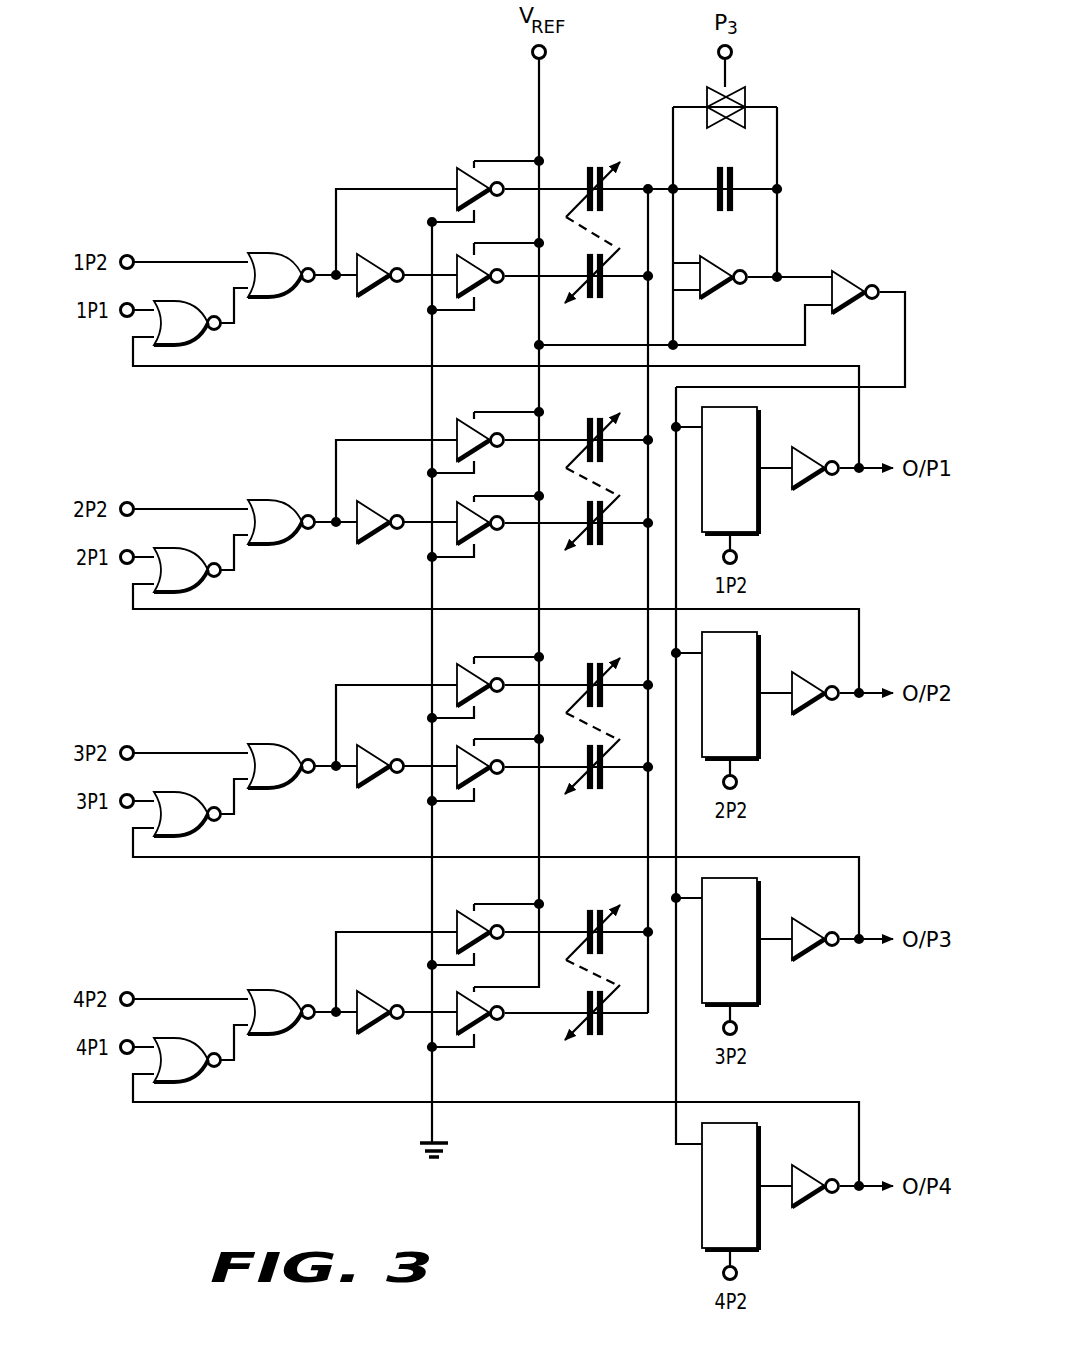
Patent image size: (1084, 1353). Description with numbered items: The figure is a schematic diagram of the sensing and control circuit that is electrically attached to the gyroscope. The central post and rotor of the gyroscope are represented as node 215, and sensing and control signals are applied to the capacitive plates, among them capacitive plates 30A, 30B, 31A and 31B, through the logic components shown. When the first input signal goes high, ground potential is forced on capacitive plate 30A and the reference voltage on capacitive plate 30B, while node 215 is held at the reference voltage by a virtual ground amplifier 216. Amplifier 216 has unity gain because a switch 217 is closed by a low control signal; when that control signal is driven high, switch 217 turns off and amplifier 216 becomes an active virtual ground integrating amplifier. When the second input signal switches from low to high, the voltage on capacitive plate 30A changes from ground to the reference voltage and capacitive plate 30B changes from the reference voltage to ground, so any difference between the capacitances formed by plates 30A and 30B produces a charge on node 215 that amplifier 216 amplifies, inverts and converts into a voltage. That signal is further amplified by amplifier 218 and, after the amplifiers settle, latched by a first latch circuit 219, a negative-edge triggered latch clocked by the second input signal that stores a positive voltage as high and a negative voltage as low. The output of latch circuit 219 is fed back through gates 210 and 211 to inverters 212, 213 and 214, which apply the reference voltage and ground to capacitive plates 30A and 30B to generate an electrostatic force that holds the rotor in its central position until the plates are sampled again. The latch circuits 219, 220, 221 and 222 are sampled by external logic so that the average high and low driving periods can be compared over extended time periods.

The gate 210 is at (203, 335).
The gate 211 is at (283, 253).
The inverter 212 is at (375, 293).
The inverter 213 is at (483, 289).
The inverter 214 is at (455, 175).
The node 215 is at (651, 998).
The virtual ground amplifier 216 is at (718, 268).
The switch 217 is at (745, 97).
The amplifier 218 is at (846, 282).
The first latch circuit 219 is at (760, 513).
The latch circuit 220 is at (760, 738).
The latch circuit 221 is at (760, 983).
The latch circuit 222 is at (760, 1228).
The capacitive plate 30A is at (592, 165).
The capacitive plate 30B is at (597, 302).
The capacitive plate 31A is at (592, 417).
The capacitive plate 31B is at (597, 550).